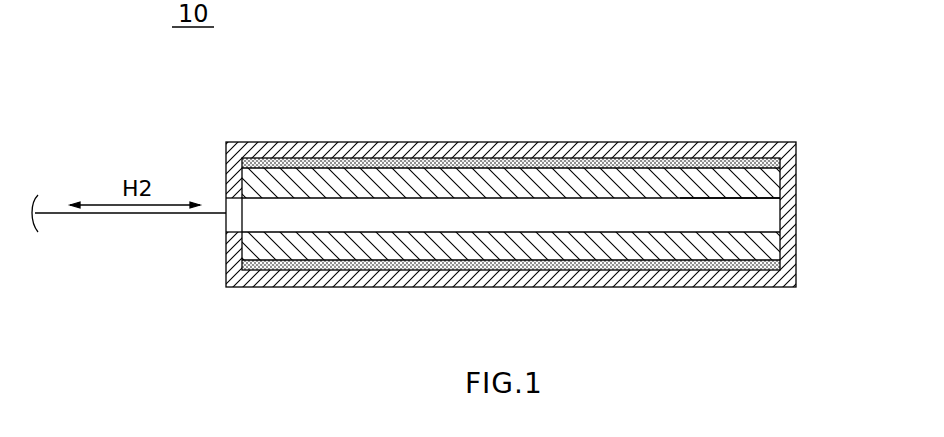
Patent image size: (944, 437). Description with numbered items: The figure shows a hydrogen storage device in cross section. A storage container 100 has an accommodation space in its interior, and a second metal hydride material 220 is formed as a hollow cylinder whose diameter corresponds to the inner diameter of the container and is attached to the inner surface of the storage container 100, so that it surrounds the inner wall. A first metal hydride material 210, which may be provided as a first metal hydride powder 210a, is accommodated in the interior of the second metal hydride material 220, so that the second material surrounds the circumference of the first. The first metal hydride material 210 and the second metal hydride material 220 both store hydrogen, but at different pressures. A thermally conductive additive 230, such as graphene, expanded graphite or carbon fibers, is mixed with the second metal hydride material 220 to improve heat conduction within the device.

The storage container 100 is at (790, 195).
The first metal hydride material 210 is at (688, 178).
The first metal hydride powder 210a is at (748, 180).
The second metal hydride material 220 is at (565, 158).
The thermally conductive additive 230 is at (483, 158).